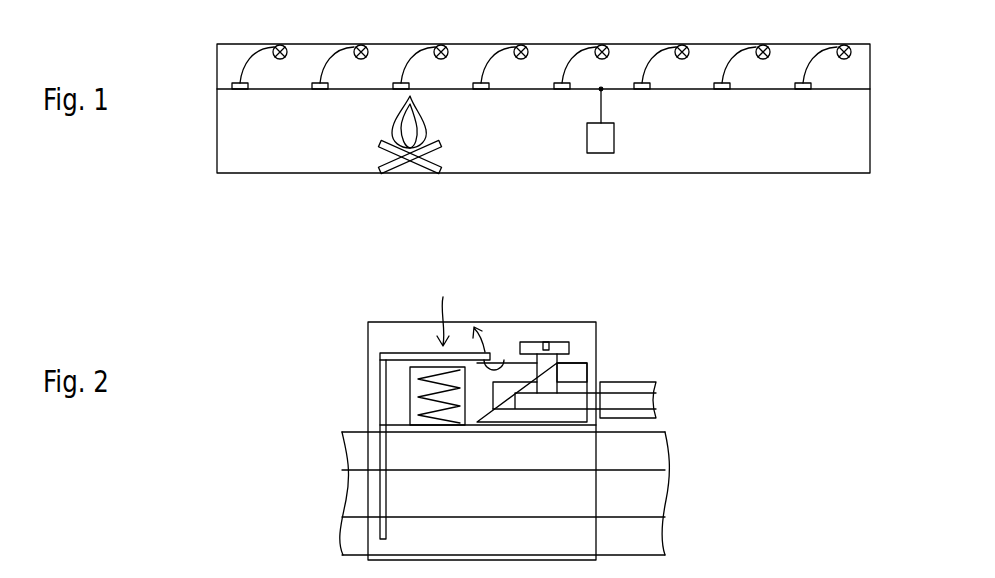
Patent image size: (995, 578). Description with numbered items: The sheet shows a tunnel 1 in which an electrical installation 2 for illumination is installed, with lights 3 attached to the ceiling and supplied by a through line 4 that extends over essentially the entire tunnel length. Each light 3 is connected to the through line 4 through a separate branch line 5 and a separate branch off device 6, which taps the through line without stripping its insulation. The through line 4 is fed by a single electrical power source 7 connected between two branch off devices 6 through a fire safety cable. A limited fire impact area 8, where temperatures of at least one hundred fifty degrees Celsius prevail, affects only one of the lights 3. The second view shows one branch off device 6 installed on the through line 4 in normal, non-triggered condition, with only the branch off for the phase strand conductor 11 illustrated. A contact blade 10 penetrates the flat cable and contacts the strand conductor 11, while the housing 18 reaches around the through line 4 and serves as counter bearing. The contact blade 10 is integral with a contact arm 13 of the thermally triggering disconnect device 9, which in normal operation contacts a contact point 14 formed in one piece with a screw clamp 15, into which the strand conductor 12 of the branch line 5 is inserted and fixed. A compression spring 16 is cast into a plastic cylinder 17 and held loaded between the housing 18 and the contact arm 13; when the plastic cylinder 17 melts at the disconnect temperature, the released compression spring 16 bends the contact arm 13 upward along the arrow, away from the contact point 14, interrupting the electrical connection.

In FIG. 1, the tunnel 1 is at (292, 174).
In FIG. 1, the electrical installation 2 is at (755, 115).
In FIG. 1, the light 3 is at (454, 60).
In FIG. 1, the through line 4 is at (276, 90).
In FIG. 2, the through line 4 is at (691, 463).
In FIG. 1, the branch line 5 is at (410, 74).
In FIG. 2, the branch line 5 is at (640, 382).
In FIG. 1, the branch off device 6 is at (386, 88).
In FIG. 2, the branch off device 6 is at (609, 316).
In FIG. 1, the electrical power source 7 is at (615, 138).
In FIG. 1, the fire impact area 8 is at (459, 147).
In FIG. 2, the disconnect device 9 is at (461, 315).
In FIG. 2, the contact blade 10 is at (375, 497).
In FIG. 2, the strand conductor 11 is at (663, 492).
In FIG. 2, the strand conductor 12 is at (653, 403).
In FIG. 2, the contact arm 13 is at (417, 352).
In FIG. 2, the contact point 14 is at (498, 368).
In FIG. 2, the screw clamp 15 is at (589, 359).
In FIG. 2, the compression spring 16 is at (423, 393).
In FIG. 2, the plastic cylinder 17 is at (408, 407).
In FIG. 2, the housing 18 is at (367, 348).